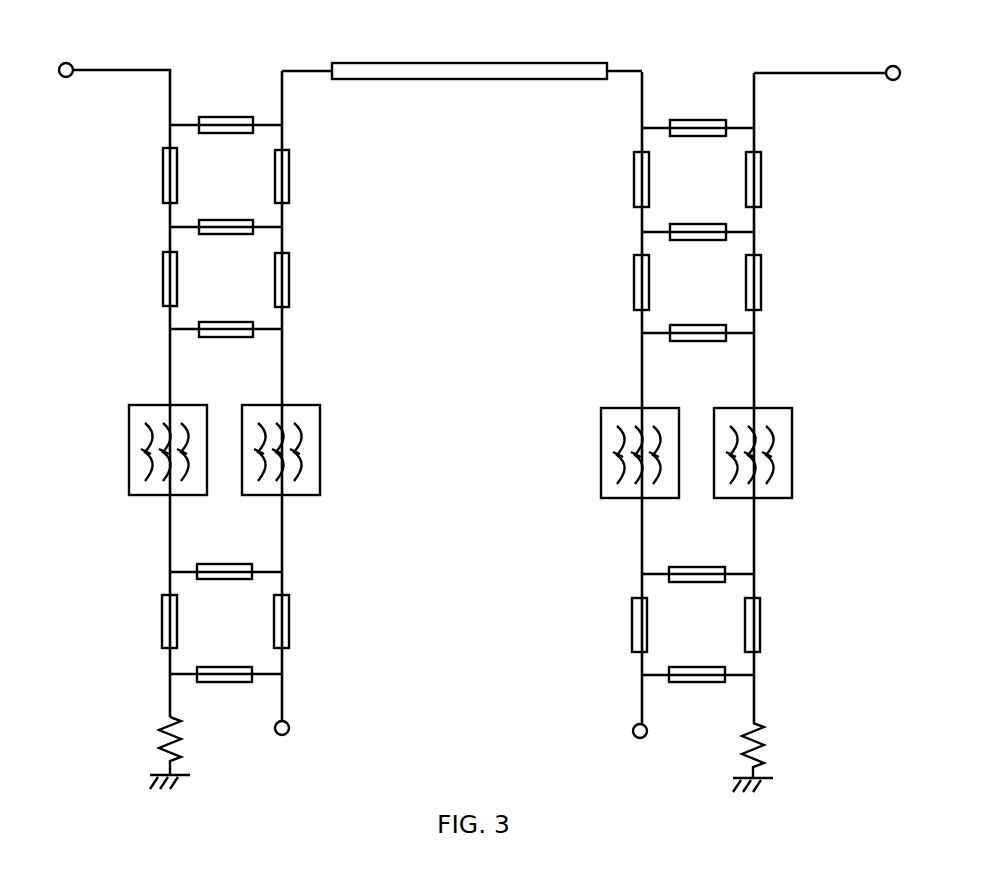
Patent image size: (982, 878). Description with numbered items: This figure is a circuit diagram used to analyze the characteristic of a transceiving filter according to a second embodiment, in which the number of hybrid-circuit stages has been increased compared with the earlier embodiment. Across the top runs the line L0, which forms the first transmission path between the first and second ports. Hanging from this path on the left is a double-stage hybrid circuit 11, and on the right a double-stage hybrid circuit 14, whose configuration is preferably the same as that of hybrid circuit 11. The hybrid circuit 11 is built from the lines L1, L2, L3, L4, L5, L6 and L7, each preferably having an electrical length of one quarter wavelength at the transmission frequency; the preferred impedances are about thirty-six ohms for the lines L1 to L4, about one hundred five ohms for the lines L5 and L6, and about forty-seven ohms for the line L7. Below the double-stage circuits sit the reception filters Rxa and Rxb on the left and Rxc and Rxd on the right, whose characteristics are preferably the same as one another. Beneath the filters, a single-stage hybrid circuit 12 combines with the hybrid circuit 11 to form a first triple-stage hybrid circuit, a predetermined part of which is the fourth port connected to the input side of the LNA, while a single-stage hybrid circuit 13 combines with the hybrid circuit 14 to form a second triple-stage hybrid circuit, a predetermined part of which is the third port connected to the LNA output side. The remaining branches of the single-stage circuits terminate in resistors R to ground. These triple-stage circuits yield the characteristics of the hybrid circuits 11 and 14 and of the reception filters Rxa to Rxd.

The double-stage hybrid circuit 11 is at (257, 201).
The single-stage hybrid circuit 12 is at (319, 560).
The single-stage hybrid circuit 13 is at (791, 565).
The double-stage hybrid circuit 14 is at (793, 120).
The line L0 is at (465, 63).
The line L1 is at (163, 276).
The line L2 is at (290, 283).
The line L3 is at (163, 176).
The line L4 is at (290, 177).
The line L5 is at (230, 322).
The line L6 is at (230, 117).
The line L7 is at (230, 220).
The reception filter Rxa is at (141, 450).
The reception filter Rxb is at (307, 450).
The reception filter Rxc is at (613, 453).
The reception filter Rxd is at (781, 453).
The terminating resistor R is at (462, 754).